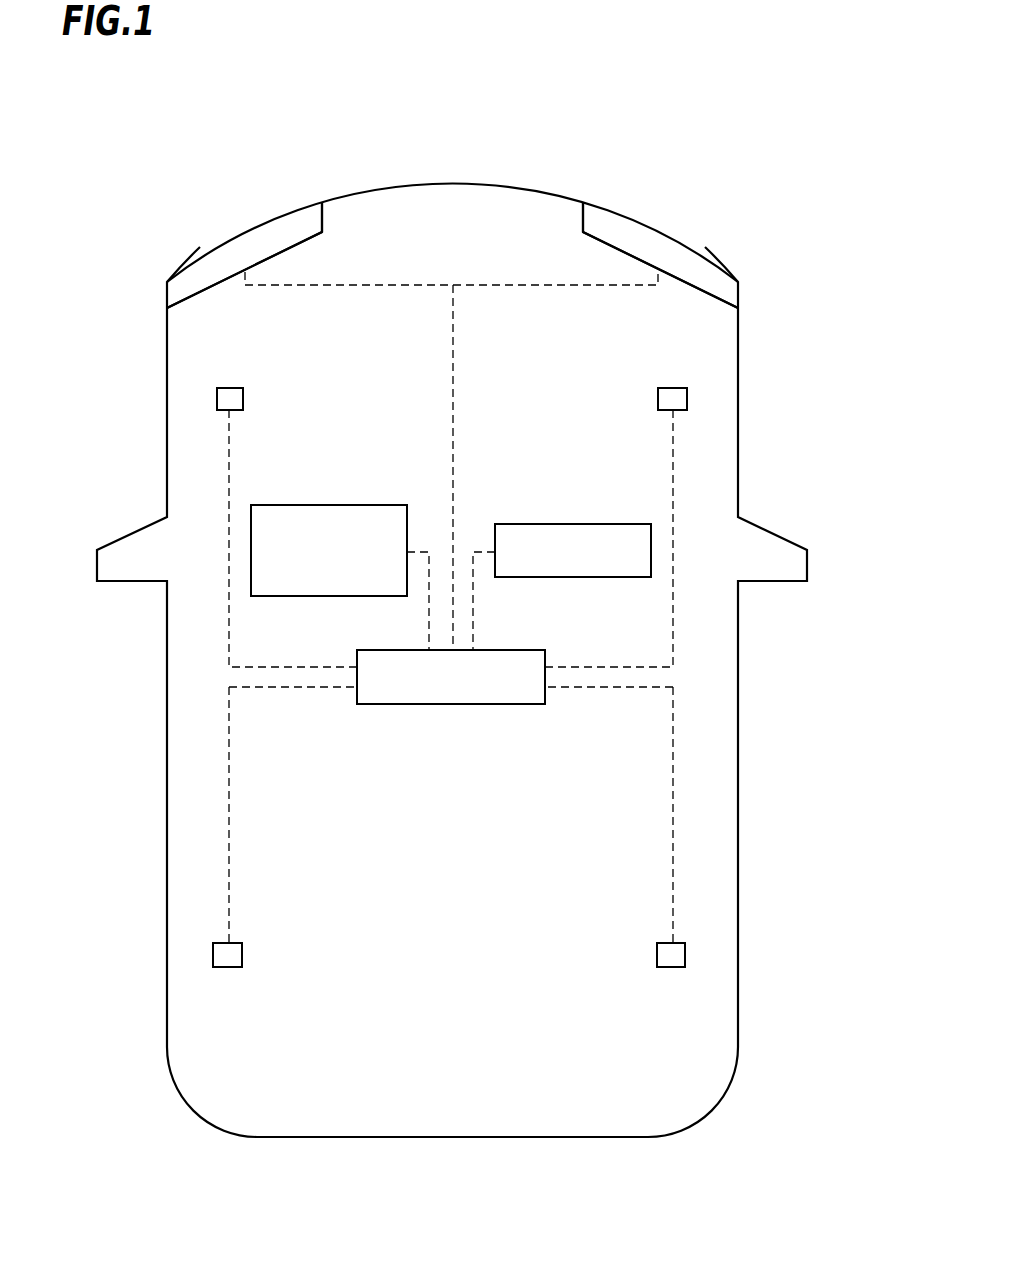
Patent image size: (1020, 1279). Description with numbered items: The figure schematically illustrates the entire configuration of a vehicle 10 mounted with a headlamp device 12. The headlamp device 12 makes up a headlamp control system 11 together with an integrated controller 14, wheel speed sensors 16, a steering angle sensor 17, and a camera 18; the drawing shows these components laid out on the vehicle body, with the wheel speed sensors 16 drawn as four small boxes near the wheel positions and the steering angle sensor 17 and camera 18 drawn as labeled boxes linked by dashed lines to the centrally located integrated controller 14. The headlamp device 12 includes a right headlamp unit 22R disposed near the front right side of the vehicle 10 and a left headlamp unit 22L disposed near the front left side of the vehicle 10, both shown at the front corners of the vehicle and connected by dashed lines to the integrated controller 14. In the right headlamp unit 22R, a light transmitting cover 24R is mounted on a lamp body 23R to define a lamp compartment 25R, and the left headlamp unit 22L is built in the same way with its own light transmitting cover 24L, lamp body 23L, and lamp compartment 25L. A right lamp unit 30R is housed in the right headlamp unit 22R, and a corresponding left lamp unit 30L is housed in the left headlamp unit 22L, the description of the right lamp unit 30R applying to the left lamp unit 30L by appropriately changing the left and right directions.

The vehicle 10 is at (619, 156).
The headlamp control system 11 is at (407, 712).
The headlamp device 12 is at (414, 298).
The integrated controller 14 is at (489, 704).
The wheel speed sensors 16 is at (243, 398).
The steering angle sensor 17 is at (330, 505).
The camera 18 is at (572, 524).
The left headlamp unit 22L is at (204, 228).
The right headlamp unit 22R is at (701, 228).
The lamp body 23L is at (326, 201).
The lamp body 23R is at (579, 201).
The light transmitting cover 24L is at (189, 258).
The light transmitting cover 24R is at (716, 258).
The lamp compartment 25L is at (208, 274).
The lamp compartment 25R is at (697, 274).
The left lamp unit 30L is at (272, 232).
The right lamp unit 30R is at (633, 232).